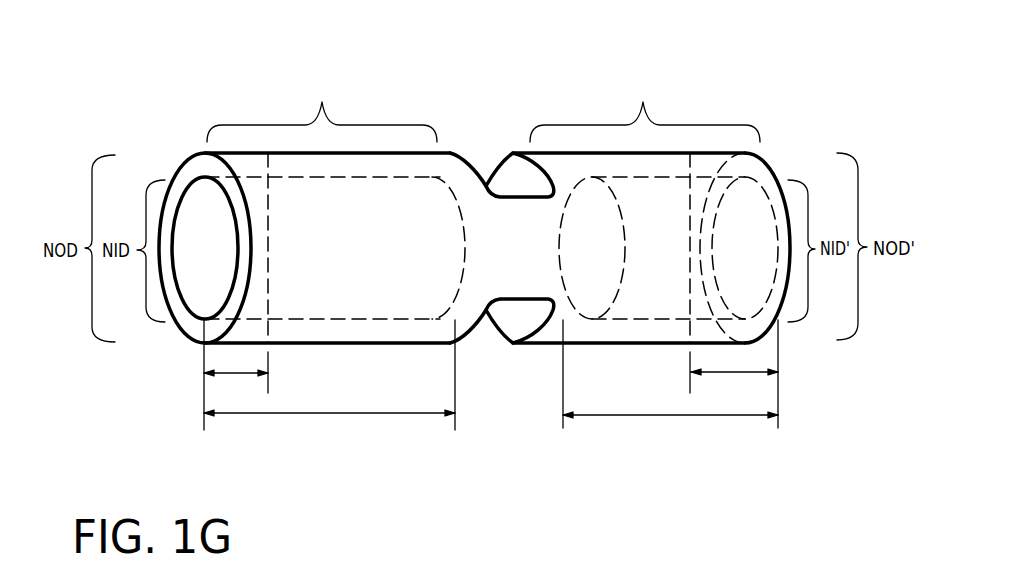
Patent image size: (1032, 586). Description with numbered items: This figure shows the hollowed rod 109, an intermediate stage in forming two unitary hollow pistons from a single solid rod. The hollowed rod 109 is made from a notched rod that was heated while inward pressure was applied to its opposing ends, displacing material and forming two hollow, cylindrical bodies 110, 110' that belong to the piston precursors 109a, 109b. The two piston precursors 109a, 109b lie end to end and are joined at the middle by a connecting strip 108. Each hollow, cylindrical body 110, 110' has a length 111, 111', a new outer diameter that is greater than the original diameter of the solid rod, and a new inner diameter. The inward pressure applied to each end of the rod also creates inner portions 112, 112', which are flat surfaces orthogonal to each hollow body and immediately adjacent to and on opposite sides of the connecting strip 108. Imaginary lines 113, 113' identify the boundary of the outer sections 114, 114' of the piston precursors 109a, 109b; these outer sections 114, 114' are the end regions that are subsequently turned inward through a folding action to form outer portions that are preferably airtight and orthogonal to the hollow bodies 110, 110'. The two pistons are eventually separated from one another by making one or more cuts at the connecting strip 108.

The connecting strip 108 is at (540, 283).
The hollowed rod 109 is at (578, 54).
The piston precursor 109a is at (322, 108).
The piston precursor 109b is at (645, 197).
The hollow cylindrical body 110 is at (217, 238).
The hollow cylindrical body 110' is at (805, 248).
The length 111 is at (329, 392).
The length 111' is at (670, 384).
The inner portion 112 is at (463, 215).
The inner portion 112' is at (520, 215).
The imaginary line 113 is at (306, 248).
The imaginary line 113' is at (712, 248).
The outer section 114 is at (204, 291).
The outer section 114' is at (771, 273).